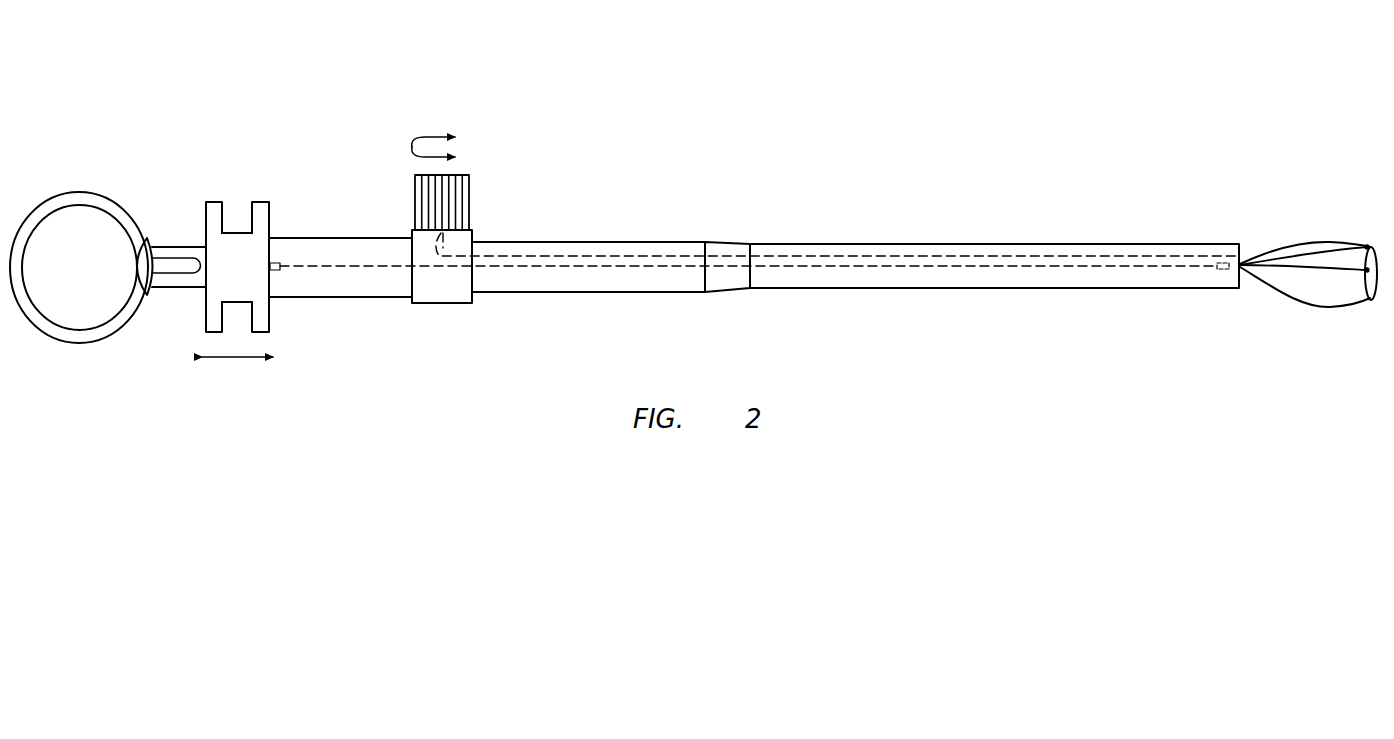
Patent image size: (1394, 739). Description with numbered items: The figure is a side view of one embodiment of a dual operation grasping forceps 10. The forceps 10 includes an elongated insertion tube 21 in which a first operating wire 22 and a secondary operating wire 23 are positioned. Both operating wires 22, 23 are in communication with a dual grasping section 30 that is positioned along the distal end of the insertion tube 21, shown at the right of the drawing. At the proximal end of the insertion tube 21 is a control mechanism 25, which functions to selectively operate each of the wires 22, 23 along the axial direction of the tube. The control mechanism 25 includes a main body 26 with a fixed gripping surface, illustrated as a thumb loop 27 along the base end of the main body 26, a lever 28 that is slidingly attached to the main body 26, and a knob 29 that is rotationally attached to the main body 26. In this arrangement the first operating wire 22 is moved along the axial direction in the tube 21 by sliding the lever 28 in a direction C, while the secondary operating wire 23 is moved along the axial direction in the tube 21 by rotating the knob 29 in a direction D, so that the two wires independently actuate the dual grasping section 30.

The forceps 10 is at (95, 98).
The elongated insertion tube 21 is at (1018, 290).
The first operating wire 22 is at (609, 267).
The secondary operating wire 23 is at (583, 255).
The control mechanism 25 is at (212, 180).
The main body 26 is at (357, 300).
The thumb loop 27 is at (57, 193).
The lever 28 is at (238, 250).
The knob 29 is at (460, 175).
The dual grasping section 30 is at (1377, 227).